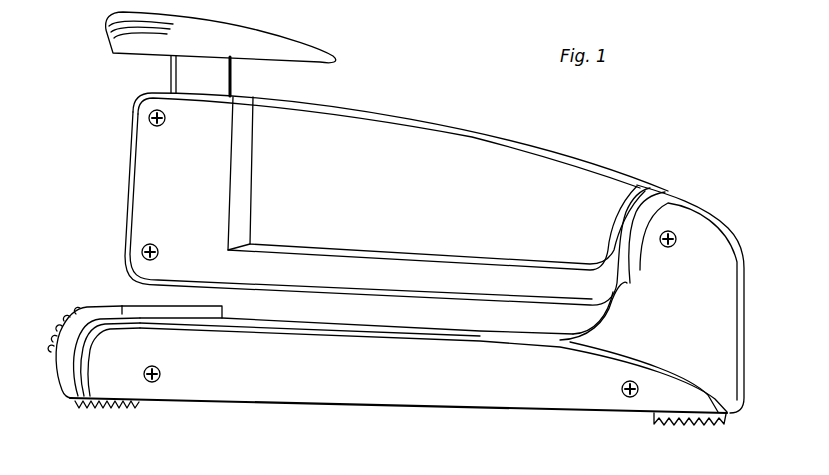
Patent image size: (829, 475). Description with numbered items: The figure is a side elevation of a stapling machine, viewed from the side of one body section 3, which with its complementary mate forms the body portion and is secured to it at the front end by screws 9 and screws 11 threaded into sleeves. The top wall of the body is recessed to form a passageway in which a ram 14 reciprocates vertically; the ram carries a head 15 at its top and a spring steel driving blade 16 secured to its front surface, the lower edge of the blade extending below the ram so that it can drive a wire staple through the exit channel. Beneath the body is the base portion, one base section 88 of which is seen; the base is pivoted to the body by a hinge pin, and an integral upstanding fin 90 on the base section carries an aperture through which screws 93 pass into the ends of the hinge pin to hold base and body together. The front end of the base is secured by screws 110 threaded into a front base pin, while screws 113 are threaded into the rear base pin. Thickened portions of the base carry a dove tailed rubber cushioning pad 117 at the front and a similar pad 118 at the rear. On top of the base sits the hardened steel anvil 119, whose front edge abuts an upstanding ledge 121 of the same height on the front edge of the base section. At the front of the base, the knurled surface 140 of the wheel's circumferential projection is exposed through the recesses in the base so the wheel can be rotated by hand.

The body section 3 is at (145, 181).
The screws 9 is at (149, 118).
The screws 11 is at (141, 251).
The ram 14 is at (183, 67).
The head 15 is at (292, 43).
The driving blade 16 is at (173, 83).
The base section 88 is at (390, 400).
The upstanding fin 90 is at (710, 233).
The screws 93 is at (667, 248).
The screws 110 is at (161, 374).
The screws 113 is at (621, 389).
The cushioning pad 117 is at (124, 405).
The cushioning pad 118 is at (680, 428).
The anvil 119 is at (224, 312).
The upstanding ledge 121 is at (125, 312).
The knurling 140 is at (67, 317).